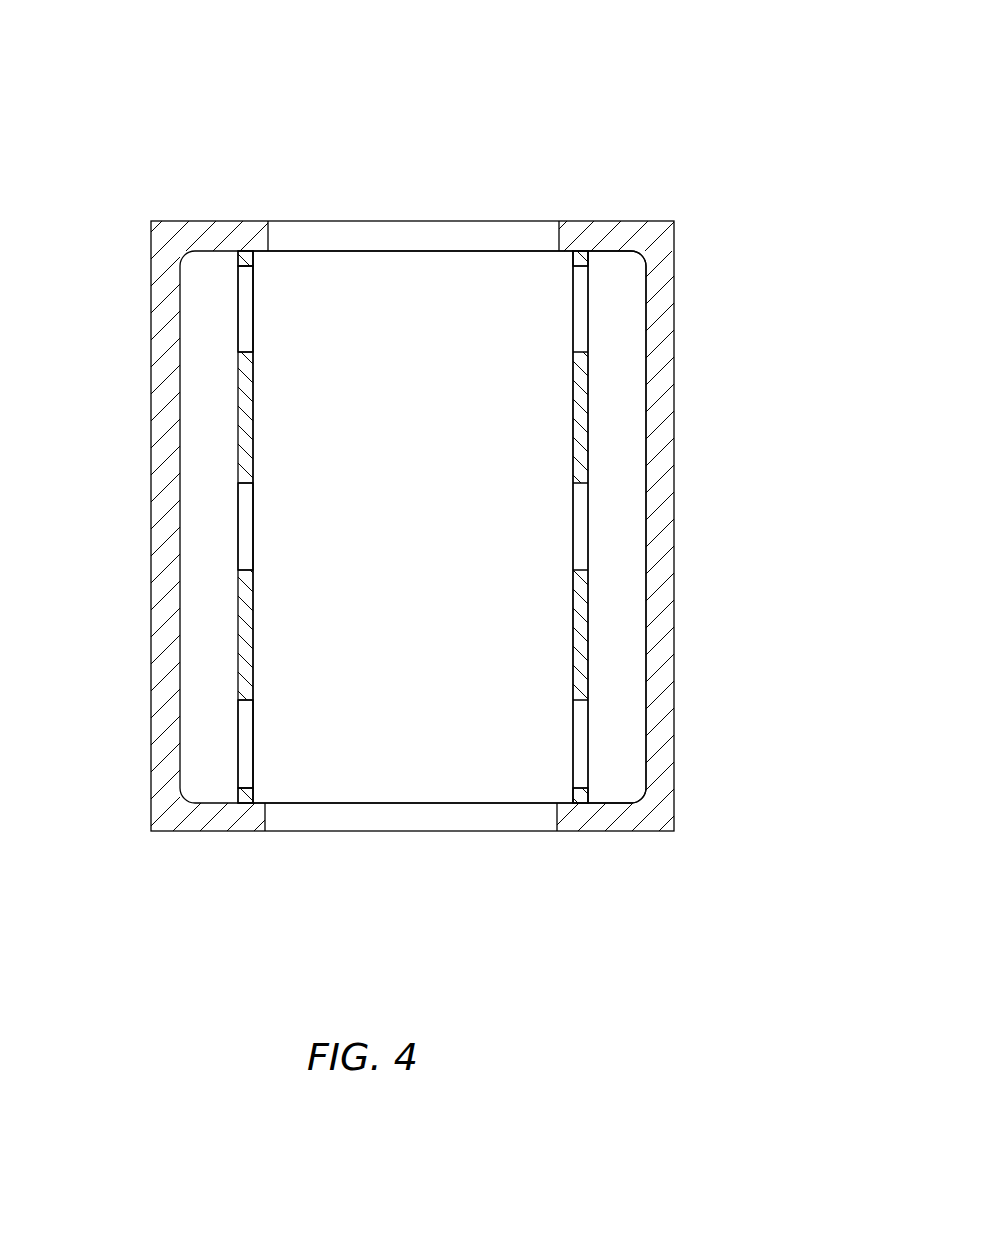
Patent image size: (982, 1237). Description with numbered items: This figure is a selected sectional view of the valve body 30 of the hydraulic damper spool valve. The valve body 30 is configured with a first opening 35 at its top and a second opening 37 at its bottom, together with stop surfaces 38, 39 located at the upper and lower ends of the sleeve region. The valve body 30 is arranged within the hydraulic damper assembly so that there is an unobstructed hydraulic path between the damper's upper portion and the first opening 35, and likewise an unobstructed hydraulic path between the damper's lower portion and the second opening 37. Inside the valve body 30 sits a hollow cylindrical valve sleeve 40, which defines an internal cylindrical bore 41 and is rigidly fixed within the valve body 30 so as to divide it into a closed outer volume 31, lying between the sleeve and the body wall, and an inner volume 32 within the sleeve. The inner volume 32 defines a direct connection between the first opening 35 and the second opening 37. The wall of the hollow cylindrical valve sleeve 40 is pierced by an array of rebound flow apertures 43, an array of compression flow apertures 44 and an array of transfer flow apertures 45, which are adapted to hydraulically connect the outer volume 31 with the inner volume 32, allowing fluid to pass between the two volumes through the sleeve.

The valve body 30 is at (213, 238).
The closed outer volume 31 is at (627, 337).
The inner volume 32 is at (490, 572).
The first opening 35 is at (482, 232).
The second opening 37 is at (493, 820).
The stop surface 38 is at (265, 253).
The stop surface 39 is at (258, 802).
The hollow cylindrical valve sleeve 40 is at (582, 435).
The internal cylindrical bore 41 is at (255, 453).
The rebound flow apertures 43 is at (242, 328).
The compression flow apertures 44 is at (245, 740).
The transfer flow apertures 45 is at (245, 530).